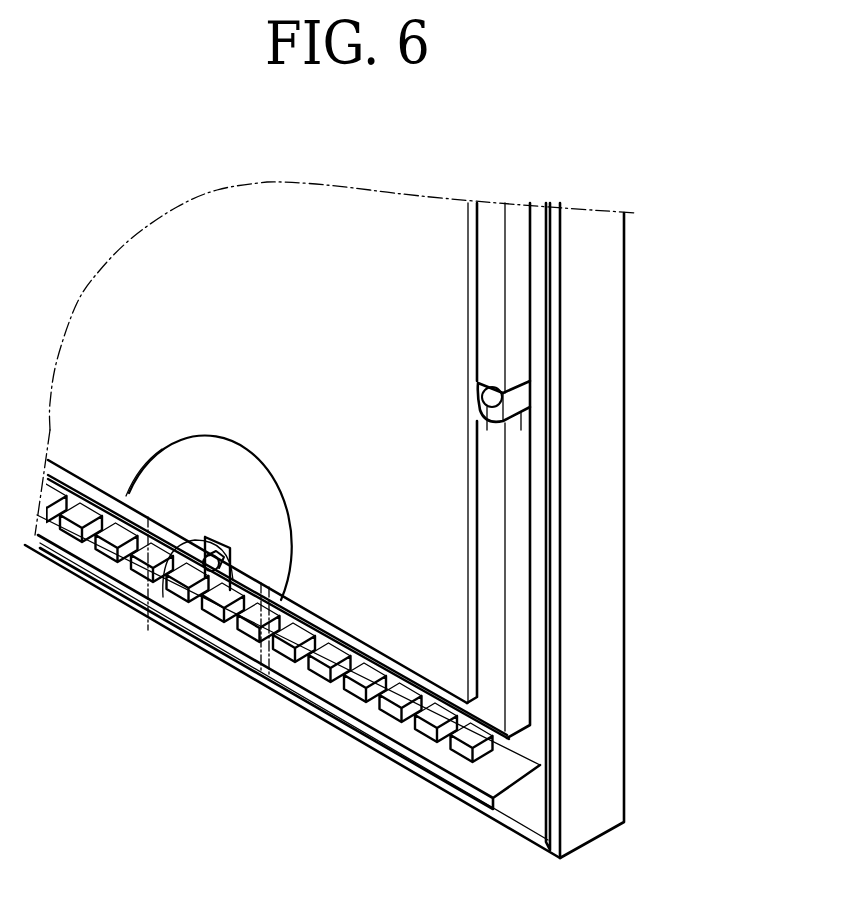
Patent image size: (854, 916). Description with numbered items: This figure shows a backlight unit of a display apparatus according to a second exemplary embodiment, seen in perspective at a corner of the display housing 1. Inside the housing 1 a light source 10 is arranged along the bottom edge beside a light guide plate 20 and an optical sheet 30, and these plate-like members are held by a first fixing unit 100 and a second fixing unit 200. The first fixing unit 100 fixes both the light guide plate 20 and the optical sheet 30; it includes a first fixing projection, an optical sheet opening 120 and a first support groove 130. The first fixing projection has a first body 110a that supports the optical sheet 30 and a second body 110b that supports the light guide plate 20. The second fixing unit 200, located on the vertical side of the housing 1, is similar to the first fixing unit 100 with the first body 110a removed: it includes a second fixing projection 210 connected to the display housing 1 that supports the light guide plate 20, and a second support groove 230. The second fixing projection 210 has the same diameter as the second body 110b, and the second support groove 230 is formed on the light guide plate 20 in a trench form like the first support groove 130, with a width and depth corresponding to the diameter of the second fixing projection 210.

The display housing 1 is at (613, 635).
The light source 10 is at (468, 783).
The light guide plate 20 is at (497, 667).
The optical sheet 30 is at (445, 675).
The first fixing unit 100 is at (267, 618).
The first body 110a is at (193, 577).
The second body 110b is at (150, 557).
The optical sheet opening 120 is at (193, 627).
The first support groove 130 is at (230, 617).
The second fixing unit 200 is at (603, 467).
The second fixing projection 210 is at (487, 407).
The second support groove 230 is at (522, 412).